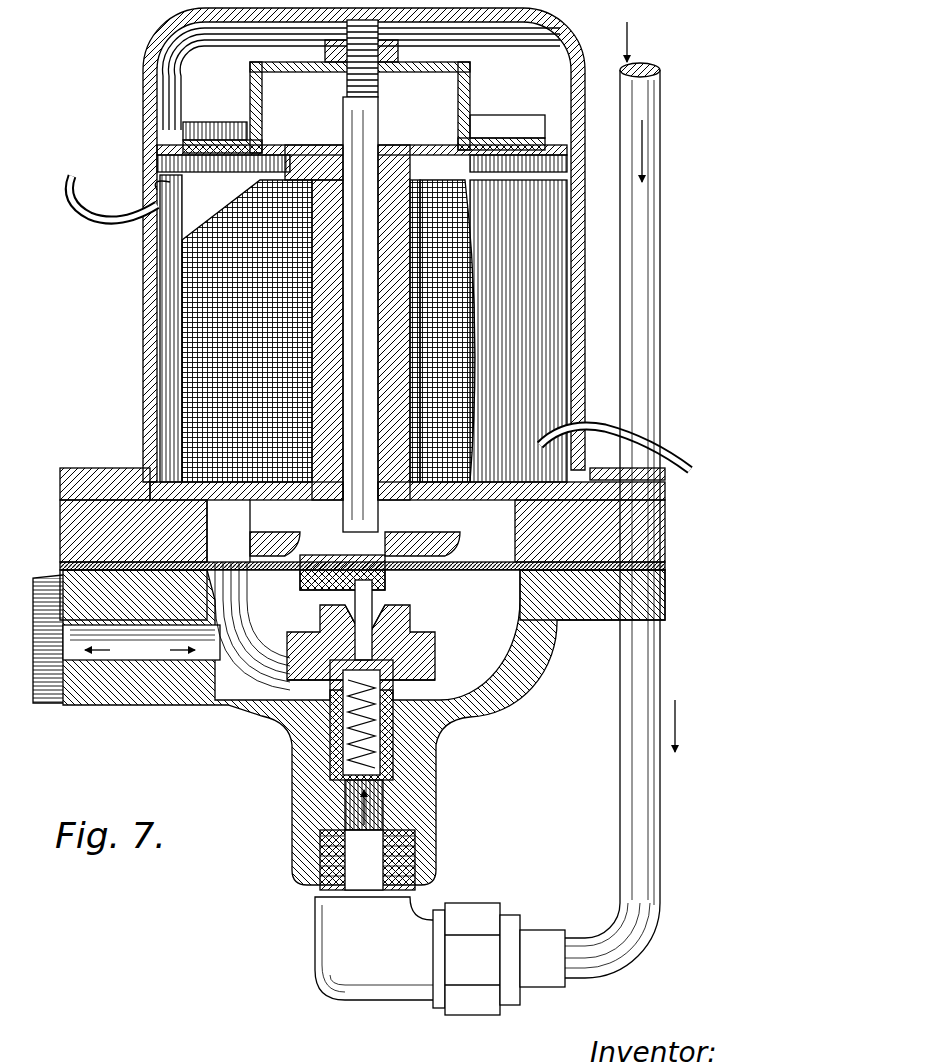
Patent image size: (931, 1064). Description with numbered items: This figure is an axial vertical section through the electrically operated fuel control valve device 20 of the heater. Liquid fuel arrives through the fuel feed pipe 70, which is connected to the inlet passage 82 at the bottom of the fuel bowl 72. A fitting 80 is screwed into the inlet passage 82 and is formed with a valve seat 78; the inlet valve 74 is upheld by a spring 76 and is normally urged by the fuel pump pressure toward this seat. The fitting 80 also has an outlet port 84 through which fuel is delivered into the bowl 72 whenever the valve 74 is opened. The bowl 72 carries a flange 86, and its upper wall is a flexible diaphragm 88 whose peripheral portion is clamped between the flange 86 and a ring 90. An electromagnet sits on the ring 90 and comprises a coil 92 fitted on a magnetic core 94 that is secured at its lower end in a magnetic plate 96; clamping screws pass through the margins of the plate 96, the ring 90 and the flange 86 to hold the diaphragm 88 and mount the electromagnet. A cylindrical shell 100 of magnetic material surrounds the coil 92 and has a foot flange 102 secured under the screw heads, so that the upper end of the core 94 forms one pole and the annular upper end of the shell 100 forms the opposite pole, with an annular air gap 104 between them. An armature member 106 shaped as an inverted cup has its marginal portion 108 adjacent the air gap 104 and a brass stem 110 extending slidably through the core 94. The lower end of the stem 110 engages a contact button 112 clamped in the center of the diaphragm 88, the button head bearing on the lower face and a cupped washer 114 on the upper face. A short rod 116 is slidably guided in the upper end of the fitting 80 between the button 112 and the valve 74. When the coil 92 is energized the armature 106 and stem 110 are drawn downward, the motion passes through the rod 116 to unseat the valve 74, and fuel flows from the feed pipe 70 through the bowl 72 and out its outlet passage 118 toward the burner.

The control valve device 20 is at (140, 258).
The fuel feed pipe 70 is at (640, 835).
The fuel bowl 72 is at (500, 700).
The inlet valve 74 is at (420, 652).
The spring 76 is at (382, 740).
The valve seat 78 is at (420, 636).
The fitting 80 is at (428, 672).
The inlet passage 82 is at (385, 798).
The outlet port 84 is at (328, 601).
The flange 86 is at (665, 598).
The flexible diaphragm 88 is at (665, 568).
The ring 90 is at (665, 540).
The coil 92 is at (540, 350).
The magnetic core 94 is at (320, 416).
The magnetic plate 96 is at (240, 485).
The cylindrical shell 100 is at (157, 347).
The foot flange 102 is at (62, 480).
The annular air gap 104 is at (182, 150).
The armature member 106 is at (440, 65).
The marginal portion 108 is at (515, 135).
The brass stem 110 is at (380, 130).
The contact button 112 is at (442, 540).
The cupped washer 114 is at (296, 542).
The short rod 116 is at (355, 592).
The outlet passage 118 is at (152, 660).